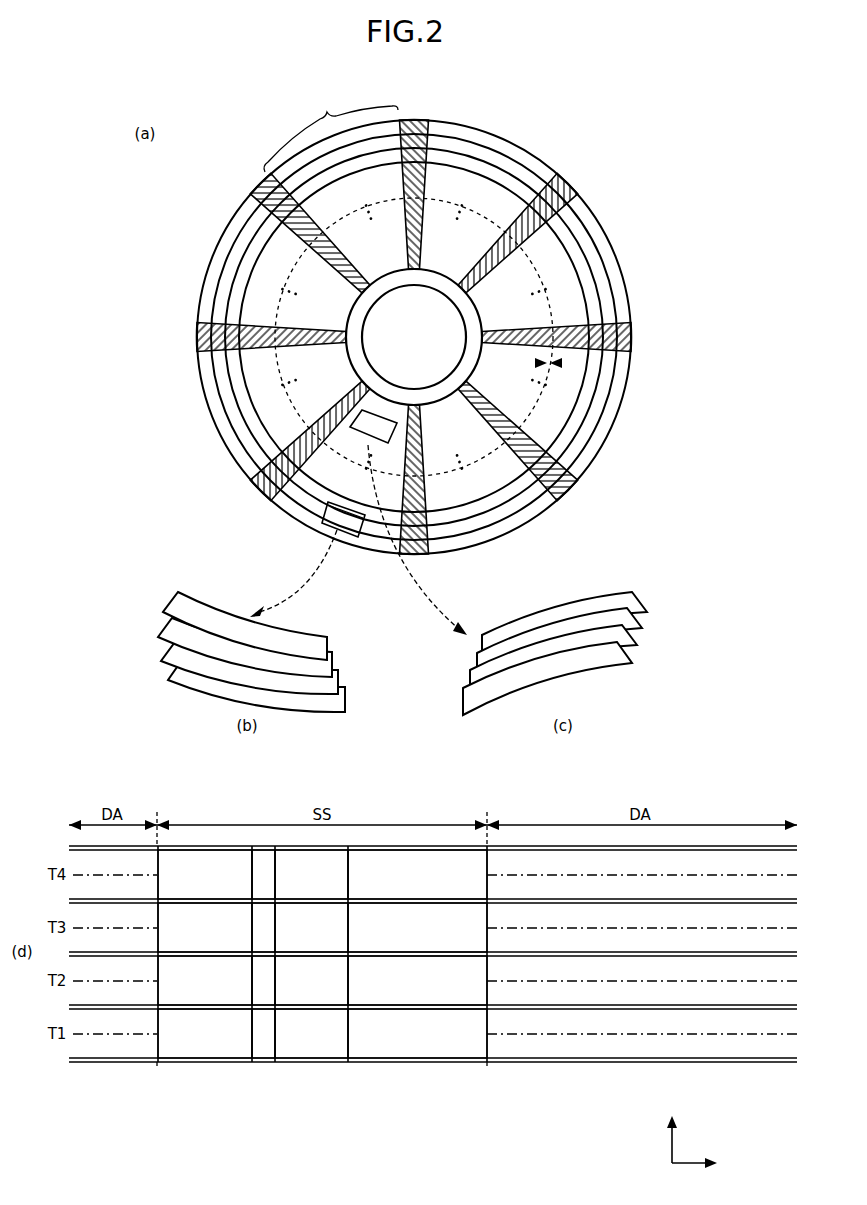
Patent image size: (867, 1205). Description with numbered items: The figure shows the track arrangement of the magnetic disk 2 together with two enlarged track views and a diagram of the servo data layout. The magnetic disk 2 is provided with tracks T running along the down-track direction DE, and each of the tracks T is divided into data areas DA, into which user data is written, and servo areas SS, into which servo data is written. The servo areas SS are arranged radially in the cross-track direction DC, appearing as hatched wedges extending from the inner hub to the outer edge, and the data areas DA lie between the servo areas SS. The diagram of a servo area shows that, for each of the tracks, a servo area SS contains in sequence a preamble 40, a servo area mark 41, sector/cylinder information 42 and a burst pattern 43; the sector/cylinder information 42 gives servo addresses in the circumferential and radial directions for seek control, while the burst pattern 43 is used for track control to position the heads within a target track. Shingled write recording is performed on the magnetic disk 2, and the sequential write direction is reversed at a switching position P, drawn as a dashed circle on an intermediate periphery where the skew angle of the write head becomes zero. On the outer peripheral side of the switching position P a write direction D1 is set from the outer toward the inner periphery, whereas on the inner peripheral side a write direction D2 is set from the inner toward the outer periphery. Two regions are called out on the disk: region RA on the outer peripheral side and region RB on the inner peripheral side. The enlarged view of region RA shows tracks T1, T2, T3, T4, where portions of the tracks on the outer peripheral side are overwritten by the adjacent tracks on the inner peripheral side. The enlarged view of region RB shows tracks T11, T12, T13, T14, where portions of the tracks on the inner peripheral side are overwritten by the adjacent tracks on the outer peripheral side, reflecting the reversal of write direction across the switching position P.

The magnetic disk 2 is at (630, 293).
The tracks T is at (490, 147).
The switching position P is at (488, 203).
The servo areas SS is at (430, 113).
The data areas DA is at (331, 132).
The write direction D1 is at (562, 363).
The write direction D2 is at (535, 363).
The region RA is at (323, 523).
The region RB is at (355, 435).
The track T1 is at (180, 666).
The track T2 is at (176, 648).
The track T3 is at (174, 624).
The track T4 is at (178, 600).
The track T11 is at (621, 658).
The track T12 is at (626, 640).
The track T13 is at (631, 620).
The track T14 is at (636, 602).
The preamble 40 is at (206, 1062).
The servo area mark 41 is at (265, 1062).
The sector/cylinder information 42 is at (313, 1062).
The burst pattern 43 is at (393, 1062).
The cross-track direction DC is at (667, 1129).
The down-track direction DE is at (708, 1163).